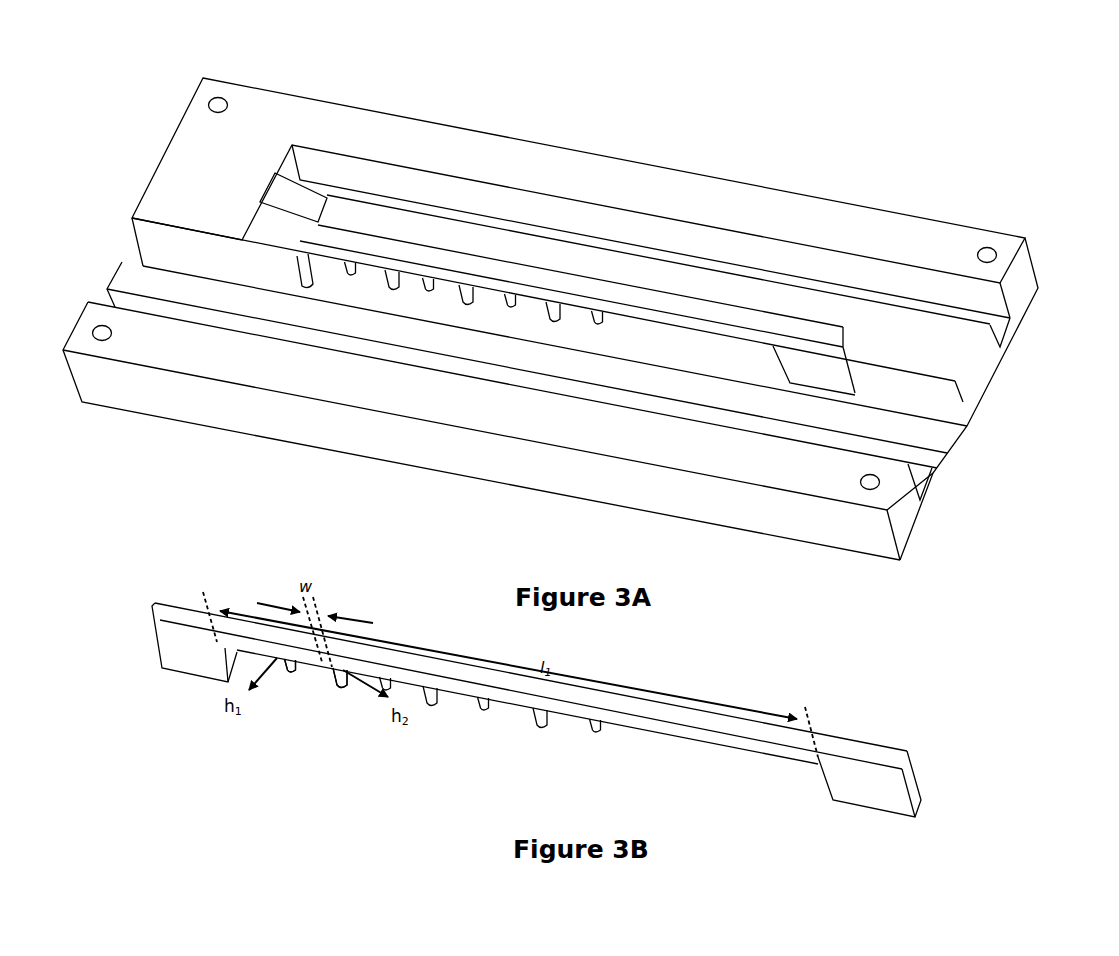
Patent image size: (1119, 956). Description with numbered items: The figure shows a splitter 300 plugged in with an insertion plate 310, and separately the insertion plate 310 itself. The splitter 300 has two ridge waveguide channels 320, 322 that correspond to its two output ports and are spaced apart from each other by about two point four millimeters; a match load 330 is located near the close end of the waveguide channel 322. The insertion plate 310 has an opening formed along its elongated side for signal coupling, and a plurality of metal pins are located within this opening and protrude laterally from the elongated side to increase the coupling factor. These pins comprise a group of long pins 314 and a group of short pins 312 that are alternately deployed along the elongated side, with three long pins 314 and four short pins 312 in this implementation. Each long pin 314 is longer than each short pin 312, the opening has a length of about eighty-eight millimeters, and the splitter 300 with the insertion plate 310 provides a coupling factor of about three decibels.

In FIG. 3A, the splitter 300 is at (140, 118).
In FIG. 3A, the insertion plate 310 is at (700, 322).
In FIG. 3B, the insertion plate 310 is at (903, 777).
In FIG. 3B, the short pin 312 is at (283, 667).
In FIG. 3B, the long pin 314 is at (337, 673).
In FIG. 3A, the ridge waveguide channel 320 is at (915, 440).
In FIG. 3A, the ridge waveguide channel 322 is at (964, 330).
In FIG. 3A, the match load 330 is at (292, 192).